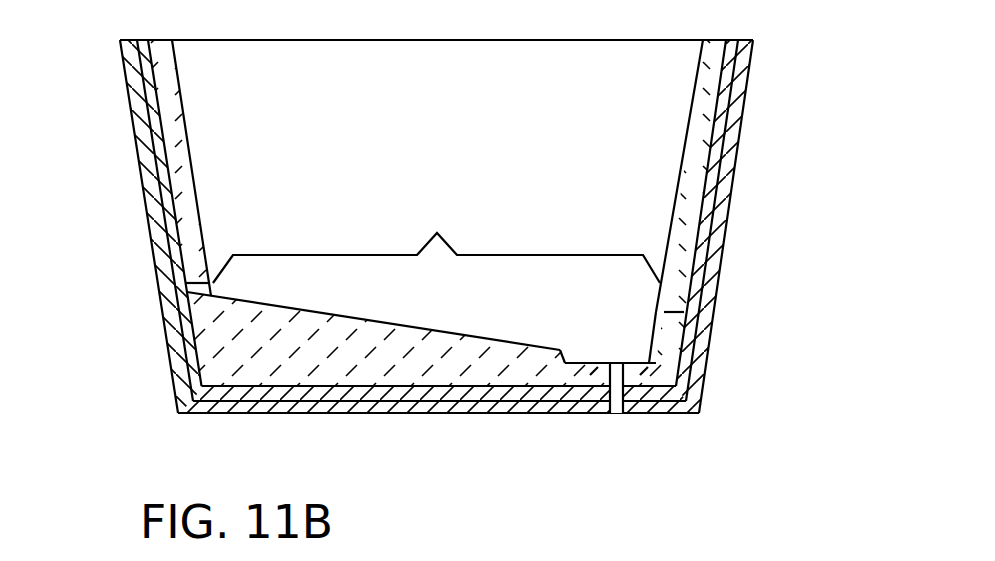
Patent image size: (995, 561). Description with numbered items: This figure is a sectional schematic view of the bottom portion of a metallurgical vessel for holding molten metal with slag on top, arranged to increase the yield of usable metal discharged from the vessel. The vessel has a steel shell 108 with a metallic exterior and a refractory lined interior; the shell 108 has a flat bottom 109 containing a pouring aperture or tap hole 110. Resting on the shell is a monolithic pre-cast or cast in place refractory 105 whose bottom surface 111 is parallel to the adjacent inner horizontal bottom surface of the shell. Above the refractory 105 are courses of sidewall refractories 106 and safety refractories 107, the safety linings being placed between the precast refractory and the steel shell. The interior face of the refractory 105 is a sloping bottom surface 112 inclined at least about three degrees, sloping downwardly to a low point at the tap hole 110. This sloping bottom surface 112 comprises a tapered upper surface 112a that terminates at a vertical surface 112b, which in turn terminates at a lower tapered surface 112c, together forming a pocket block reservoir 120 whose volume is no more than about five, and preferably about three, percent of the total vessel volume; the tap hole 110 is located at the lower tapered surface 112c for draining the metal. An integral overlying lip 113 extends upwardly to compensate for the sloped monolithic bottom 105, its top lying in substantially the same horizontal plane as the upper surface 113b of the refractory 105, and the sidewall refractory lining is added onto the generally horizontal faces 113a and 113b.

The monolithic pre-cast or cast in place refractory 105 is at (230, 353).
The sidewall refractories 106 is at (183, 163).
The safety refractories 107 is at (168, 197).
The shell 108 is at (133, 93).
The flat bottom 109 is at (290, 414).
The tap hole 110 is at (620, 418).
The bottom surface 111 is at (407, 388).
The sloping bottom surface 112 is at (436, 239).
The tapered upper surface 112a is at (350, 315).
The vertical surface 112b is at (567, 352).
The lower tapered surface 112c is at (600, 367).
The lip 113 is at (674, 360).
The horizontal face 113a is at (667, 300).
The upper surface 113b is at (213, 278).
The pocket block reservoir 120 is at (643, 342).